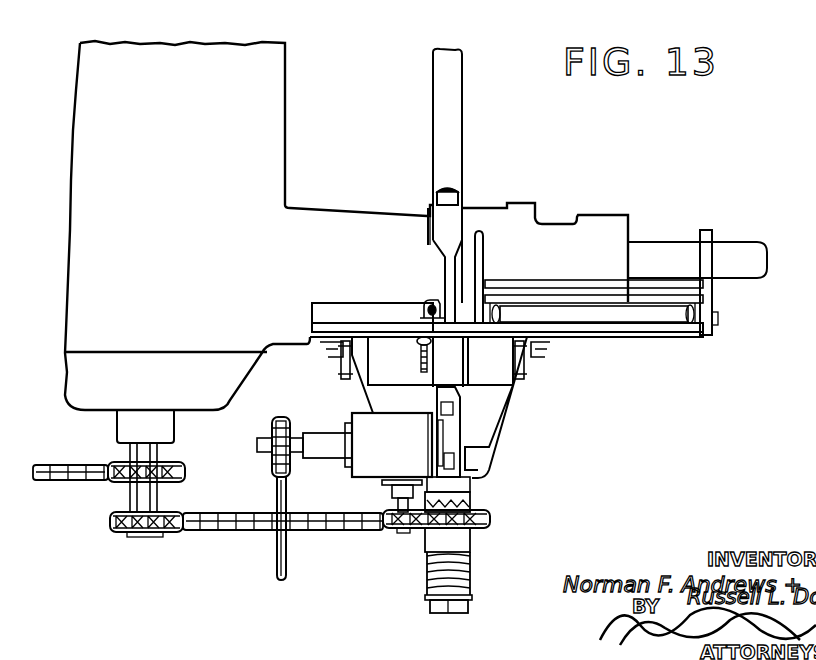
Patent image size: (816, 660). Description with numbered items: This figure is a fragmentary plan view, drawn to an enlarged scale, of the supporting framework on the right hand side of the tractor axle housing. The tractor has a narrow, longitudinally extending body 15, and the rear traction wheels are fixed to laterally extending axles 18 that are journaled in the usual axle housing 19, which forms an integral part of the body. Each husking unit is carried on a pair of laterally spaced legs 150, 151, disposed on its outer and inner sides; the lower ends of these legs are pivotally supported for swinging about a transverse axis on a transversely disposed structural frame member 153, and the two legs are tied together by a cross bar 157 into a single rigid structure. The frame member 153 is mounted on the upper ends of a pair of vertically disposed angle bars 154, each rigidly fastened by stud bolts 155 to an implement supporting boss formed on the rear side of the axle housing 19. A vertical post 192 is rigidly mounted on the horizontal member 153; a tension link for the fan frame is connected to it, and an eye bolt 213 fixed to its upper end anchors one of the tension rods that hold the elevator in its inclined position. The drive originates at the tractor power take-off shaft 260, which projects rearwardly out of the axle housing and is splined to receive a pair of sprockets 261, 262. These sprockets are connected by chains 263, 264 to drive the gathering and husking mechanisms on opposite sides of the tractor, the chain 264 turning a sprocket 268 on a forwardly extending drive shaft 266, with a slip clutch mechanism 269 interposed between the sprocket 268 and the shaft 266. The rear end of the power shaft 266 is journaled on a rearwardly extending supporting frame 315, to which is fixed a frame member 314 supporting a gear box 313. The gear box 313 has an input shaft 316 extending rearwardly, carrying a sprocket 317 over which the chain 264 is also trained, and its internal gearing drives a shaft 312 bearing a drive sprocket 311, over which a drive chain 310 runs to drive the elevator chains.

The body 15 is at (274, 117).
The axle 18 is at (745, 262).
The axle housing 19 is at (385, 231).
The leg 150 is at (708, 268).
The leg 151 is at (484, 253).
The structural frame member 153 is at (616, 333).
The angle bar 154 is at (536, 358).
The stud bolt 155 is at (548, 352).
The cross bar 157 is at (578, 292).
The vertical post 192 is at (436, 305).
The eye bolt 213 is at (421, 366).
The power take-off shaft 260 is at (160, 455).
The sprocket 261 is at (186, 478).
The sprocket 262 is at (108, 528).
The chain 263 is at (56, 484).
The chain 264 is at (222, 533).
The drive shaft 266 is at (452, 120).
The sprocket 268 is at (491, 520).
The slip clutch mechanism 269 is at (493, 567).
The drive chain 310 is at (288, 552).
The drive sprocket 311 is at (282, 418).
The shaft 312 is at (296, 447).
The gear box 313 is at (392, 445).
The frame member 314 is at (449, 440).
The supporting frame 315 is at (505, 407).
The input shaft 316 is at (396, 505).
The sprocket 317 is at (400, 530).